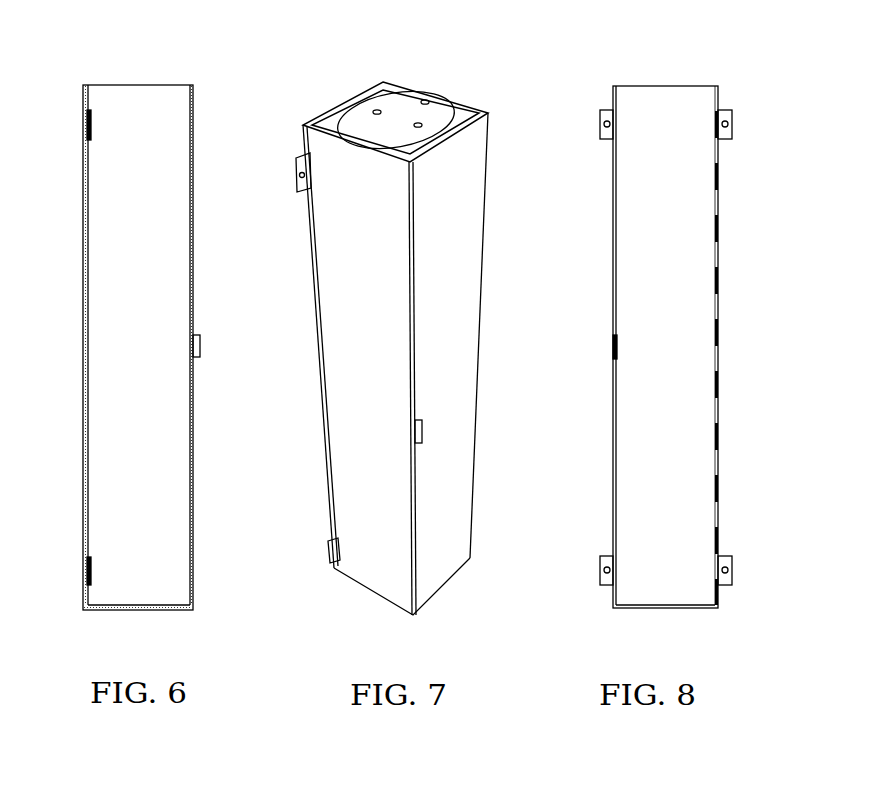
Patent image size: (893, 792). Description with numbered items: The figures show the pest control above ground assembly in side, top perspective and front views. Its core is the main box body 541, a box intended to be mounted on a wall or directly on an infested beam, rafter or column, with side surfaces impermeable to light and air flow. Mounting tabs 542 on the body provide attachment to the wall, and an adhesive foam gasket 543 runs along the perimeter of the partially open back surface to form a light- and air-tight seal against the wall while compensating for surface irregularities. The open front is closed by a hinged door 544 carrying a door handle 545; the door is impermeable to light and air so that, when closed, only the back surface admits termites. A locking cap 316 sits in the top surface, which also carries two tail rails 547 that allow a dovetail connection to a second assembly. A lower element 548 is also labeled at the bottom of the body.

In FIG. 7, the locking cap 316 is at (405, 136).
In FIG. 6, the main box body 541 is at (103, 337).
In FIG. 7, the main box body 541 is at (337, 287).
In FIG. 6, the mounting tab 542 is at (87, 118).
In FIG. 7, the mounting tab 542 is at (296, 165).
In FIG. 8, the mounting tab 542 is at (600, 117).
In FIG. 6, the adhesive foam gasket 543 is at (86, 268).
In FIG. 7, the adhesive foam gasket 543 is at (300, 133).
In FIG. 6, the hinged door 544 is at (193, 271).
In FIG. 7, the hinged door 544 is at (449, 372).
In FIG. 8, the hinged door 544 is at (645, 256).
In FIG. 6, the door handle 545 is at (200, 352).
In FIG. 7, the door handle 545 is at (423, 432).
In FIG. 8, the door handle 545 is at (613, 345).
In FIG. 7, the tail rail 547 is at (322, 112).
In FIG. 6, the bottom wall 548 is at (173, 612).
In FIG. 8, the bottom wall 548 is at (617, 612).